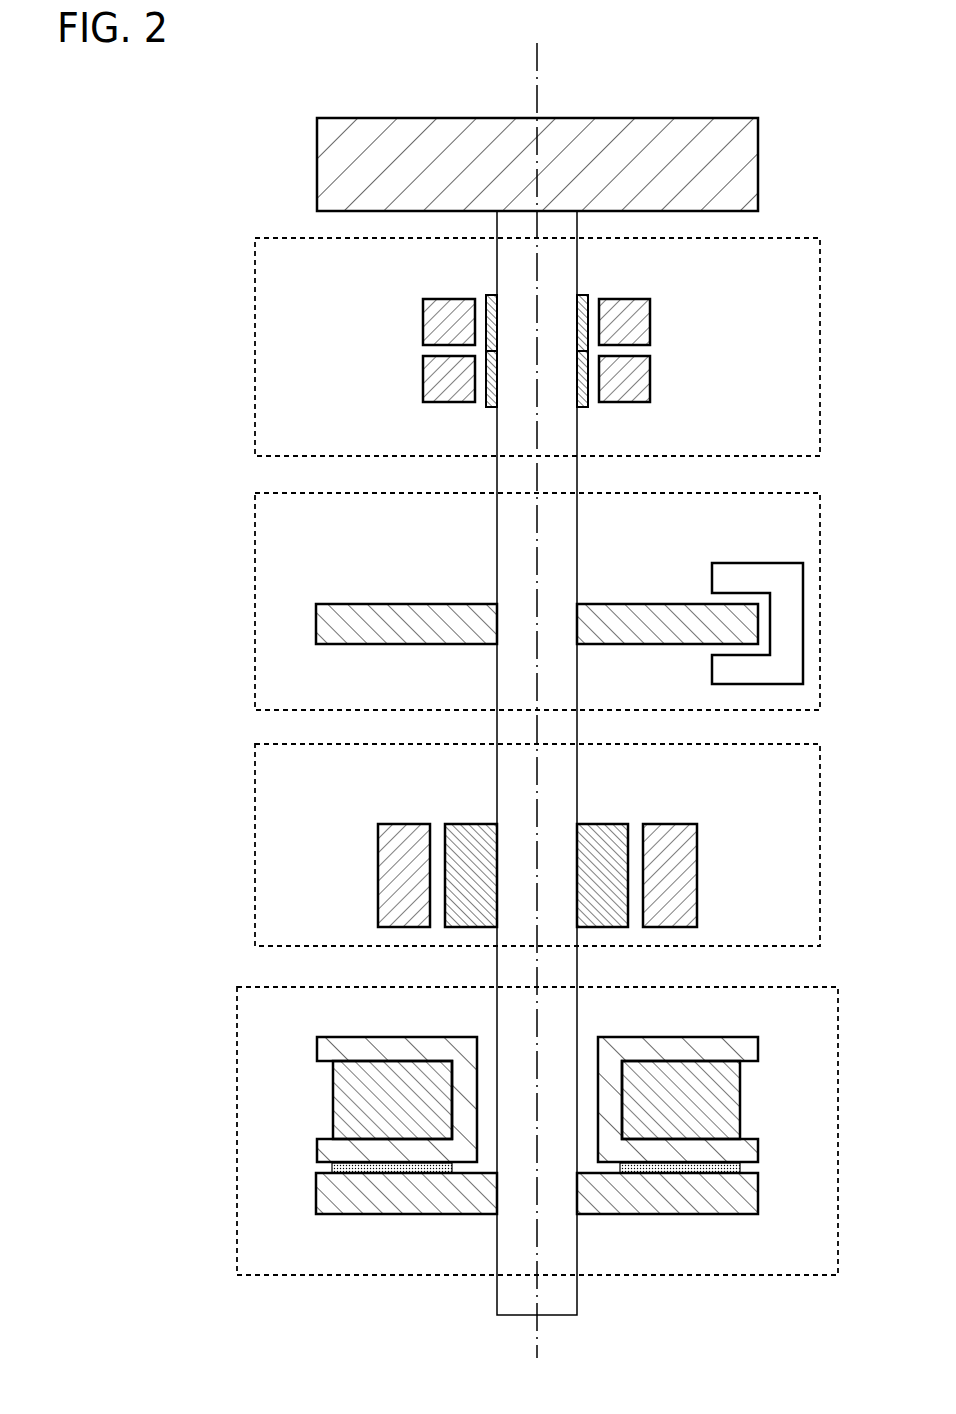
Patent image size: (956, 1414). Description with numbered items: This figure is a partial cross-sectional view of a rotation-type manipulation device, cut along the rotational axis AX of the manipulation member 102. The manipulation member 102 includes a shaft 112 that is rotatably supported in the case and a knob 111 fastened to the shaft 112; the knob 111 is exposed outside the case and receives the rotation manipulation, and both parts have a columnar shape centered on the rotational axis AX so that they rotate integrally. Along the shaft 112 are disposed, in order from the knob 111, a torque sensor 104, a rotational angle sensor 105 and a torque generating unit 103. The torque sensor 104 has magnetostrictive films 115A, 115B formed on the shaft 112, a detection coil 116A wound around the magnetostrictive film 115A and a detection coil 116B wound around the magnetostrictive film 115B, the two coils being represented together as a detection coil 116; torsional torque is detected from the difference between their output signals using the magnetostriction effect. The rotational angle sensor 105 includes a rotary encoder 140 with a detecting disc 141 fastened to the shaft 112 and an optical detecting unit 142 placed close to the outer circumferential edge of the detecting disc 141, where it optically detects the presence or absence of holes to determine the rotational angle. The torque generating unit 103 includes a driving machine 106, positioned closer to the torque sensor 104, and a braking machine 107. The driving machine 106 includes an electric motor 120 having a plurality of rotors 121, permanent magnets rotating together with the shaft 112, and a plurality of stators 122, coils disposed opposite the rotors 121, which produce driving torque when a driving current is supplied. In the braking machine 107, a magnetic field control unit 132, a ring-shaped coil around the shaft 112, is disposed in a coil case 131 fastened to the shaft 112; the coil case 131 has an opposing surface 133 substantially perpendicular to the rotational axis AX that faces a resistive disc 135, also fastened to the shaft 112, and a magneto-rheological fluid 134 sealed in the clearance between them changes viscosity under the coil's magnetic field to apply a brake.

The rotational axis AX is at (540, 72).
The manipulation member 102 is at (458, 47).
The knob 111 is at (368, 123).
The shaft 112 is at (520, 218).
The torque generating unit 103 is at (147, 795).
The torque sensor 104 is at (255, 302).
The rotational angle sensor 105 is at (255, 552).
The driving machine 106 is at (255, 852).
The braking machine 107 is at (237, 1032).
The magnetostrictive film 115A is at (581, 295).
The magnetostrictive film 115B is at (495, 409).
The detection coil 116 is at (336, 275).
The detection coil 116A is at (423, 322).
The detection coil 116B is at (423, 380).
The rotary encoder 140 is at (338, 545).
The detecting disc 141 is at (622, 620).
The optical detecting unit 142 is at (723, 580).
The electric motor 120 is at (336, 797).
The rotor 121 is at (605, 835).
The stator 122 is at (383, 885).
The coil case 131 is at (457, 1047).
The magnetic field control unit 132 is at (337, 1107).
The opposing surface 133 is at (322, 1168).
The magneto-rheological fluid 134 is at (363, 1175).
The resistive disc 135 is at (612, 1203).